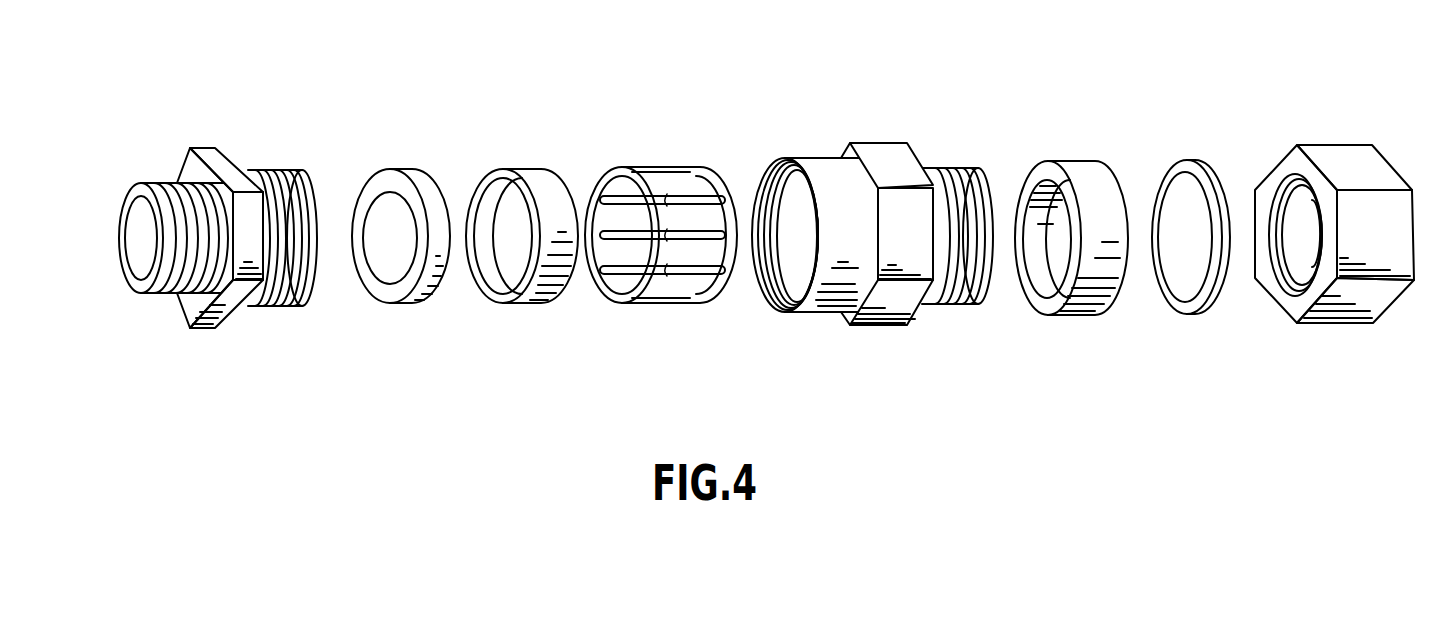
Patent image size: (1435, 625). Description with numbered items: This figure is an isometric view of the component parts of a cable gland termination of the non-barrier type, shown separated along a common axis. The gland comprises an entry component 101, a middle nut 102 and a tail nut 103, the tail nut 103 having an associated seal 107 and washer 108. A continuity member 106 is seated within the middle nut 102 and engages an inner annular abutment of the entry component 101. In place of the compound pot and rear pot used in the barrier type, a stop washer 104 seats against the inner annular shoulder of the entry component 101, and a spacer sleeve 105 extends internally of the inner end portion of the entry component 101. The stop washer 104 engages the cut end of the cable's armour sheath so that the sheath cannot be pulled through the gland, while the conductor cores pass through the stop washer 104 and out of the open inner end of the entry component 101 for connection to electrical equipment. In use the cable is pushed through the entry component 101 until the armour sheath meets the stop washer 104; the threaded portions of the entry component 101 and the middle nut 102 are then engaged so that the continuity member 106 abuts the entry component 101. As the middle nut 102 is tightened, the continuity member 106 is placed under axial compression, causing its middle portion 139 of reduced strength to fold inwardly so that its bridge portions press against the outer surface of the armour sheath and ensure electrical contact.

The entry component 101 is at (246, 140).
The middle nut 102 is at (933, 133).
The tail nut 103 is at (1361, 122).
The stop washer 104 is at (411, 168).
The spacer sleeve 105 is at (543, 168).
The continuity member 106 is at (661, 243).
The seal 107 is at (1109, 152).
The washer 108 is at (1215, 152).
The middle portion of reduced strength 139 is at (653, 302).